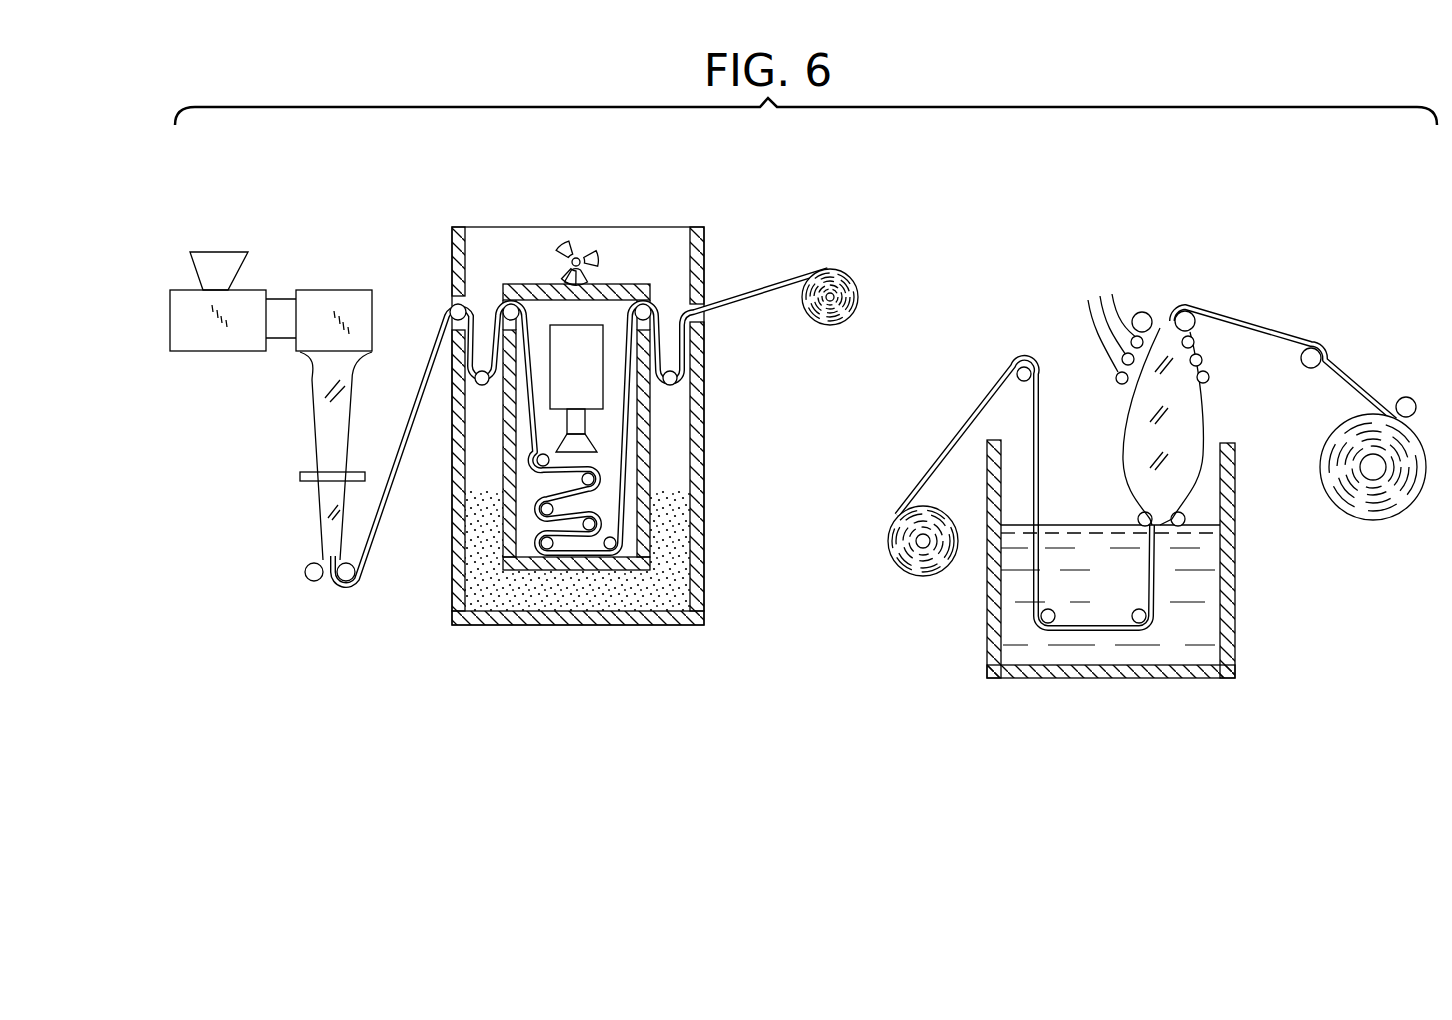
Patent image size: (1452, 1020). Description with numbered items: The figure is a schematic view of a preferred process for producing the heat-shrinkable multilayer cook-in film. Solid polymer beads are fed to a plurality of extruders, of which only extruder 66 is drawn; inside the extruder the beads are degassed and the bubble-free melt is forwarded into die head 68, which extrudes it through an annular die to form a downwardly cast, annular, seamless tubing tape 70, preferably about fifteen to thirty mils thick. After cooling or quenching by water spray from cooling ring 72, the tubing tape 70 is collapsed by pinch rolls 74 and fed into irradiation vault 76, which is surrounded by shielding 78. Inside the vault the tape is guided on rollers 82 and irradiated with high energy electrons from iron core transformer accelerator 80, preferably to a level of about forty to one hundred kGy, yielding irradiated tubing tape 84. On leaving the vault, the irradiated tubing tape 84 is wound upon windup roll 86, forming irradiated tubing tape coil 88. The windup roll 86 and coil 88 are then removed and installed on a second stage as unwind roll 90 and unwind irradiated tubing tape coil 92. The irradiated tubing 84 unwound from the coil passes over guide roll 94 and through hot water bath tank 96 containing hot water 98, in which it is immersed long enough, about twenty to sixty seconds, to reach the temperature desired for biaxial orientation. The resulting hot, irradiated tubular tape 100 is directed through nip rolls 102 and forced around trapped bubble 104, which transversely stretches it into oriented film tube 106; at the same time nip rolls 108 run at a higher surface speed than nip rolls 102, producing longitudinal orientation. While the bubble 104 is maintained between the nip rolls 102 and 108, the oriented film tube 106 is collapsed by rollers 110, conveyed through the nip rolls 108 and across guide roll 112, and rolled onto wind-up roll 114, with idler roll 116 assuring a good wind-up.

The extruder 66 is at (215, 343).
The die head 68 is at (330, 300).
The tubing tape 70 is at (312, 415).
The cooling ring 72 is at (300, 477).
The pinch rolls 74 is at (306, 573).
The irradiation vault 76 is at (652, 443).
The shielding 78 is at (572, 600).
The iron core transformer accelerator 80 is at (565, 368).
The rollers 82 is at (535, 459).
The irradiated tubing tape 84 is at (745, 290).
The windup roll 86 is at (845, 313).
The irradiated tubing tape coil 88 is at (820, 326).
The unwind roll 90 is at (904, 577).
The unwind irradiated tubing tape coil 92 is at (925, 580).
The guide roll 94 is at (1022, 366).
The hot water bath tank 96 is at (1235, 645).
The hot water 98 is at (1205, 587).
The hot, irradiated tubular tape 100 is at (1170, 562).
The nip rolls 102 is at (1138, 512).
The trapped bubble 104 is at (1192, 418).
The oriented film tube 106 is at (1275, 320).
The nip rolls 108 is at (1200, 322).
The rollers 110 is at (1135, 327).
The guide roll 112 is at (1312, 370).
The wind-up roll 114 is at (1390, 520).
The idler roll 116 is at (1406, 396).